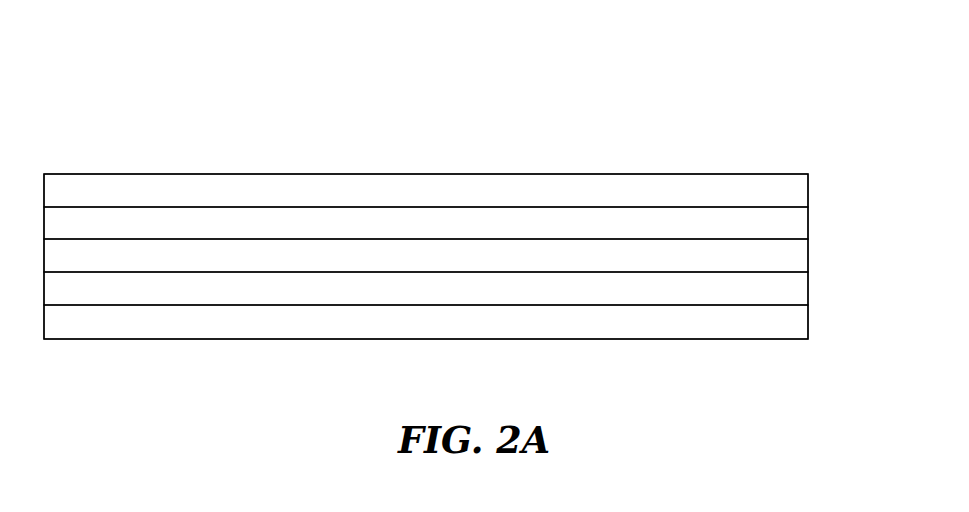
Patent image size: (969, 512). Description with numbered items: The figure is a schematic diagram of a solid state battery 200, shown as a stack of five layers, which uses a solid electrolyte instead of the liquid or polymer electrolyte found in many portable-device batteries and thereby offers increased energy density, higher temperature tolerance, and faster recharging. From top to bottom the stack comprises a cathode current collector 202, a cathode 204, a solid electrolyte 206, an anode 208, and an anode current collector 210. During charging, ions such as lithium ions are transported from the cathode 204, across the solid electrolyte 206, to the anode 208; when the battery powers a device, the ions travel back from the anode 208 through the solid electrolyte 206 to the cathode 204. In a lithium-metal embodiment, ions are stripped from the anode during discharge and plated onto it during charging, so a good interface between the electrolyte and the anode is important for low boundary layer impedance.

The solid state battery 200 is at (710, 138).
The cathode current collector 202 is at (808, 182).
The cathode 204 is at (808, 220).
The solid electrolyte 206 is at (808, 247).
The anode 208 is at (808, 280).
The anode current collector 210 is at (808, 314).